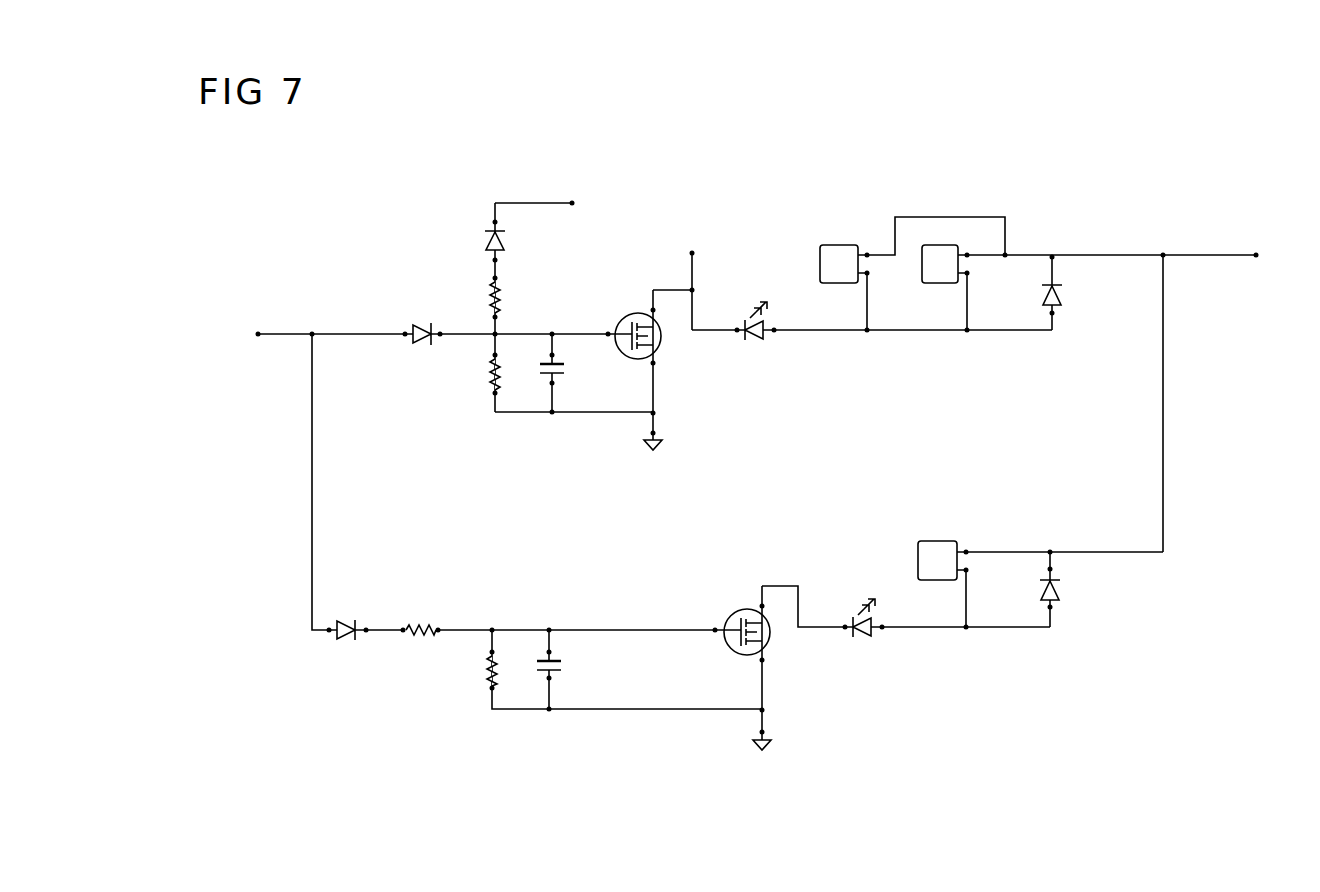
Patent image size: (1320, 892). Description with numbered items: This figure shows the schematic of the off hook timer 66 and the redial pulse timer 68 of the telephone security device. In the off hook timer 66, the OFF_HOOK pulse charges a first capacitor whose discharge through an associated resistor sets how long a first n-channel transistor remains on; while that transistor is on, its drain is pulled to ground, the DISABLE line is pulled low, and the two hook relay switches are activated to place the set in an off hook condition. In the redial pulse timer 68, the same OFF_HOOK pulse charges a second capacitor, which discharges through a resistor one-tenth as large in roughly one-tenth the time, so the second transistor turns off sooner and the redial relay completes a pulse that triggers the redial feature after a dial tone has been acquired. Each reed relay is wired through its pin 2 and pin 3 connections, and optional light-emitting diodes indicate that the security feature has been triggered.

The off hook timer 66 is at (763, 158).
The redial pulse timer 68 is at (869, 786).
The reed relay pin 2 (coil +) 2 is at (933, 237).
The reed relay pin 3 (coil -) 3 is at (867, 298).